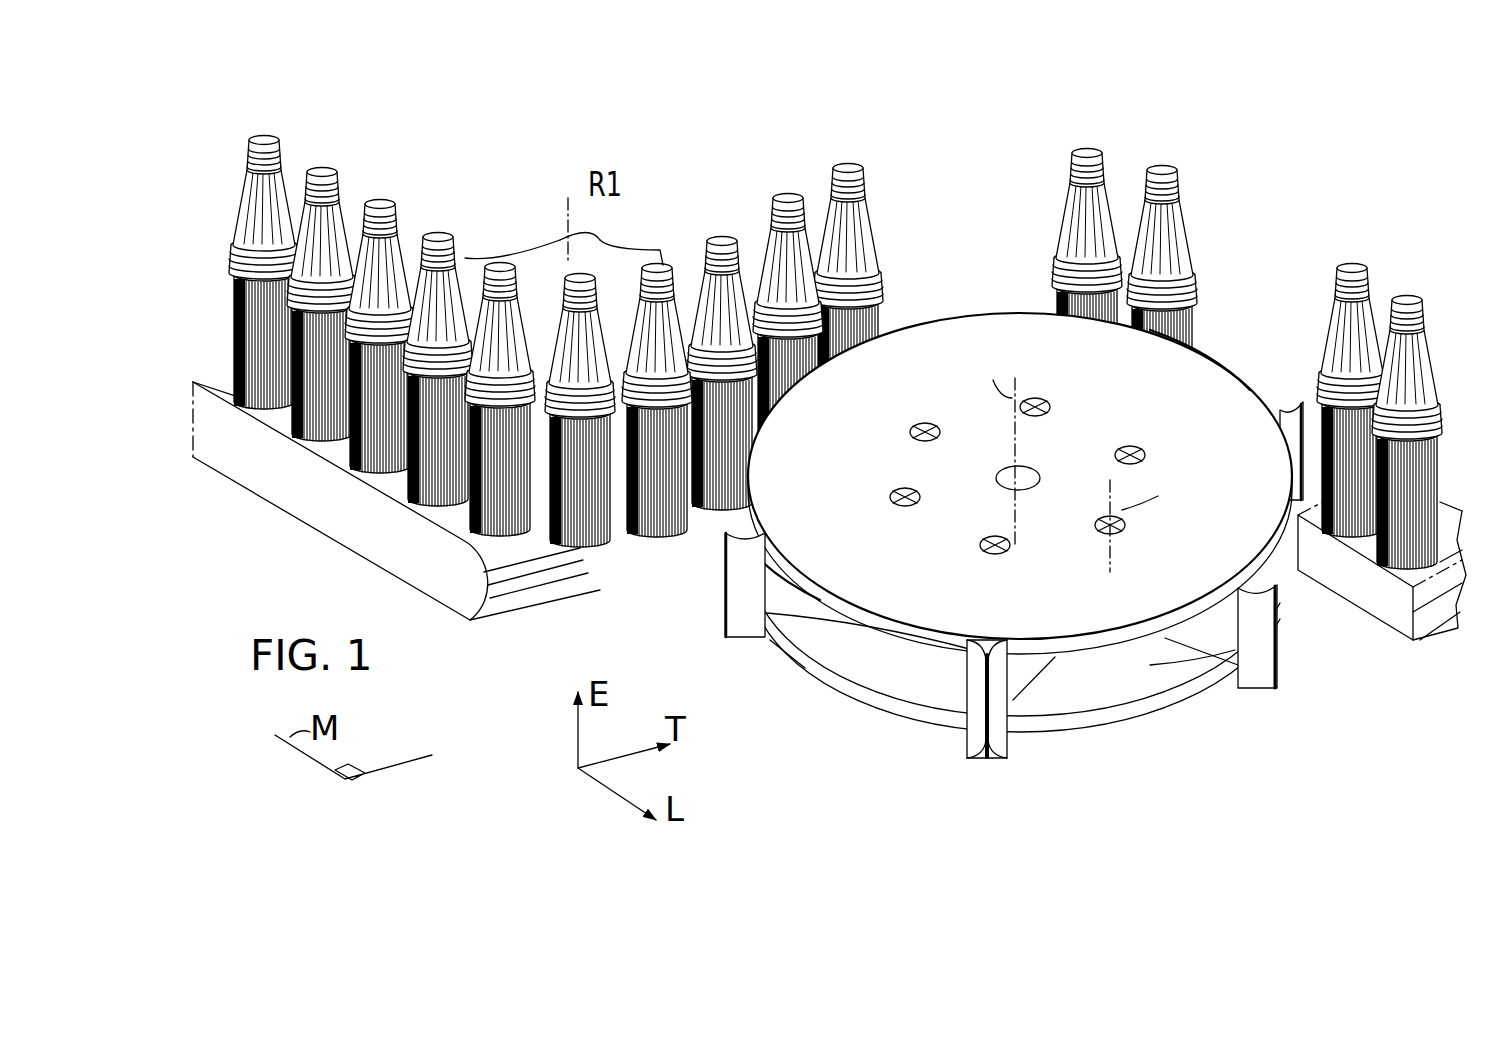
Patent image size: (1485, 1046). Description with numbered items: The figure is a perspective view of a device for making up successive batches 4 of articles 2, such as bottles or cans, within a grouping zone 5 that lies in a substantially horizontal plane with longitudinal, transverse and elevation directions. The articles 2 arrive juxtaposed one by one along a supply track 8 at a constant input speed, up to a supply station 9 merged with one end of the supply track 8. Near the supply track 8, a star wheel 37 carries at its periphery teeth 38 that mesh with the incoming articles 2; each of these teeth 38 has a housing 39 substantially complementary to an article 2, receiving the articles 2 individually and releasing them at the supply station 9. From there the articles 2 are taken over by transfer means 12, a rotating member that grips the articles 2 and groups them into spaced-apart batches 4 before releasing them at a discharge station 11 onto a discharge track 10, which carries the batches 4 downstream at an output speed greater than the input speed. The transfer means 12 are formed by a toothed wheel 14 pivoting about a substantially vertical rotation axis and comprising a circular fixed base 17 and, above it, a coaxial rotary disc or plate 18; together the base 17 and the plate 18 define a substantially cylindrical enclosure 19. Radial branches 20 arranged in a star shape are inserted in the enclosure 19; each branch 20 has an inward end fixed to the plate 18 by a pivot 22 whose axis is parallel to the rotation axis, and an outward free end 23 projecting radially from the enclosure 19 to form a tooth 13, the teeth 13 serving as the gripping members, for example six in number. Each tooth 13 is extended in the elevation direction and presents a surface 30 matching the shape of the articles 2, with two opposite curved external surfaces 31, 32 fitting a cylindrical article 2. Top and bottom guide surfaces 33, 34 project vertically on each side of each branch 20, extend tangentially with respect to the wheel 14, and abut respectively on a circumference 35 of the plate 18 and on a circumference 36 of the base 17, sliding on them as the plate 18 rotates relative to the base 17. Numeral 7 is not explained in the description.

The article 2 is at (240, 186).
The batch 4 is at (1143, 135).
The grouping zone 5 is at (795, 178).
The transfer star wheel 7 is at (1000, 458).
The supply track 8 is at (248, 445).
The supply station 9 is at (806, 383).
The discharge track 10 is at (1380, 618).
The discharge station 11 is at (1268, 368).
The transfer means 12 is at (970, 312).
The tooth 13 is at (800, 393).
The toothed wheel 14 is at (1020, 436).
The fixed base 17 is at (1215, 690).
The rotary disc 18 is at (1210, 390).
The enclosure 19 is at (1165, 660).
The radial branch 20 is at (1228, 632).
The pivot 22 is at (1040, 405).
The free end 23 is at (1085, 560).
The surface 30 is at (970, 741).
The external surface 31 is at (970, 723).
The external surface 32 is at (975, 705).
The top guide surface 33 is at (764, 548).
The bottom guide surface 34 is at (770, 632).
The circumference of the plate 35 is at (790, 568).
The circumference of the base 36 is at (862, 698).
The star wheel 37 is at (470, 235).
The teeth of the star wheel 38 is at (522, 232).
The housing 39 is at (627, 250).